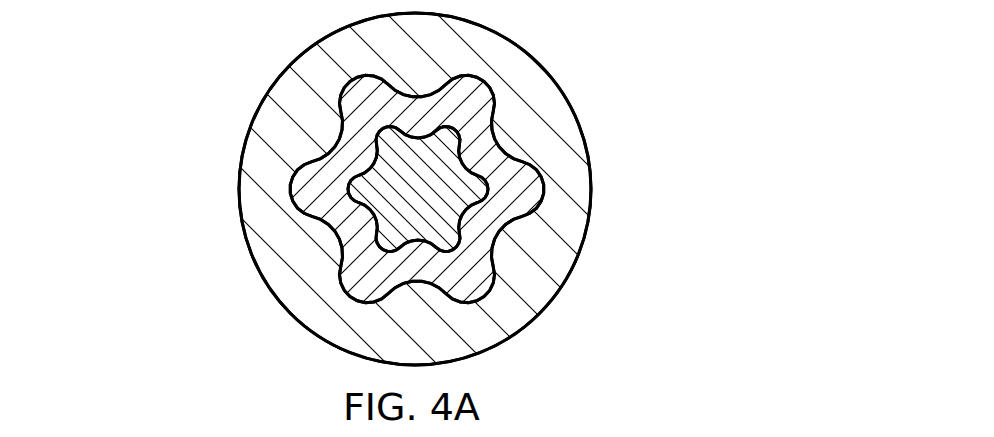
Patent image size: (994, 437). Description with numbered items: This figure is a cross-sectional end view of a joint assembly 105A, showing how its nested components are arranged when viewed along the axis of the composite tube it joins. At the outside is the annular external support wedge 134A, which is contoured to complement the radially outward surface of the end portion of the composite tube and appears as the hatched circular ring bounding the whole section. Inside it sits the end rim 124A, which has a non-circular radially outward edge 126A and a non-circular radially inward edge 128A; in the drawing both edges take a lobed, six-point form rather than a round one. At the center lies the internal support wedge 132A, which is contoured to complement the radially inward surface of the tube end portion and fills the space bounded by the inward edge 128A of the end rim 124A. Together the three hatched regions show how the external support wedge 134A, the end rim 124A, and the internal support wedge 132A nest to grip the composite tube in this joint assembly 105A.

The joint assembly 105A is at (143, 69).
The annular external support wedge 134A is at (535, 83).
The end rim 124A is at (482, 145).
The internal support wedge 132A is at (463, 190).
The non-circular radially inward edge 128A is at (463, 210).
The non-circular radially outward edge 126A is at (478, 294).